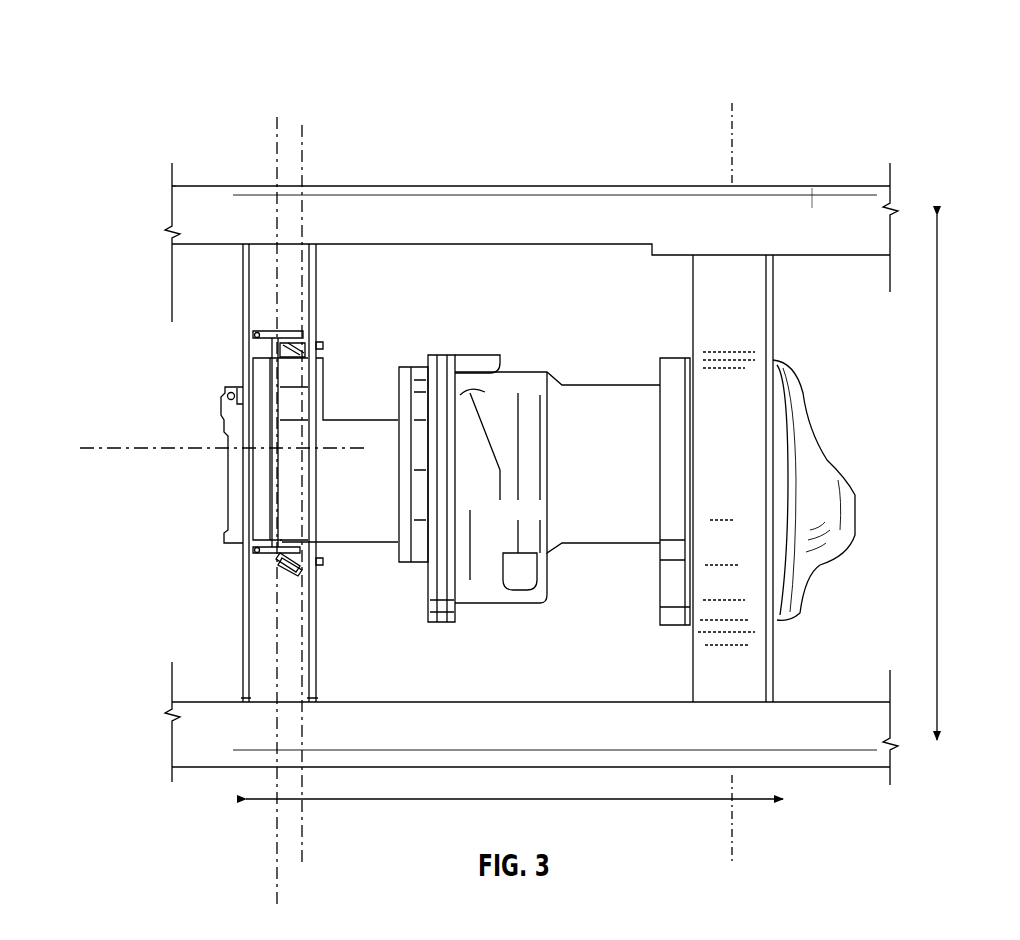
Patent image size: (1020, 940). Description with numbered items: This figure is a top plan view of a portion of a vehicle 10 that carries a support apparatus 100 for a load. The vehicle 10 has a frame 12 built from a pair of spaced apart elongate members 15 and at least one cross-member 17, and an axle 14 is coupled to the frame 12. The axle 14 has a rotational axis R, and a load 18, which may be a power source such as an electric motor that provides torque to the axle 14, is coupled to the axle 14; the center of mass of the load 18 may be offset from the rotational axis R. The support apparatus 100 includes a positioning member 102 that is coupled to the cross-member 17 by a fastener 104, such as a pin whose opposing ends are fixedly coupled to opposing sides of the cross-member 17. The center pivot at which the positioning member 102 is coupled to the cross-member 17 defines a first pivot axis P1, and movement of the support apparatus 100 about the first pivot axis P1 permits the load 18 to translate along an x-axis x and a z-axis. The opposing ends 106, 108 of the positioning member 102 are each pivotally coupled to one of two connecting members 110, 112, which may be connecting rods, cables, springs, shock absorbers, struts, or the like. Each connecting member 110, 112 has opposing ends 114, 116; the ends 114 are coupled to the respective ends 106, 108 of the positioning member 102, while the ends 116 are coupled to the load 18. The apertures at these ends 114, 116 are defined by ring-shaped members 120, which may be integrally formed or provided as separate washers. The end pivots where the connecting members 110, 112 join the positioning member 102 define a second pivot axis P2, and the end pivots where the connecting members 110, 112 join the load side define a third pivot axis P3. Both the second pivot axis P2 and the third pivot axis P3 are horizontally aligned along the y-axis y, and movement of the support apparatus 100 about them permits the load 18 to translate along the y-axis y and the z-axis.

The vehicle 10 is at (166, 107).
The frame 12 is at (586, 184).
The axle 14 is at (752, 664).
The elongate members 15 is at (812, 208).
The cross-member 17 is at (318, 273).
The load 18 is at (608, 413).
The support apparatus 100 is at (262, 584).
The positioning member 102 is at (252, 383).
The fastener 104 is at (257, 455).
The end of positioning member 106 is at (281, 540).
The end of positioning member 108 is at (287, 358).
The connecting member 110 is at (300, 571).
The connecting member 112 is at (318, 341).
The end of connecting member 114 is at (276, 328).
The end of connecting member 116 is at (318, 576).
The ring-shaped member 120 is at (258, 332).
The rotational axis R is at (733, 483).
The first pivot axis P1 is at (221, 451).
The second pivot axis P2 is at (276, 512).
The third pivot axis P3 is at (304, 497).
The x-axis x is at (936, 482).
The y-axis y is at (517, 804).